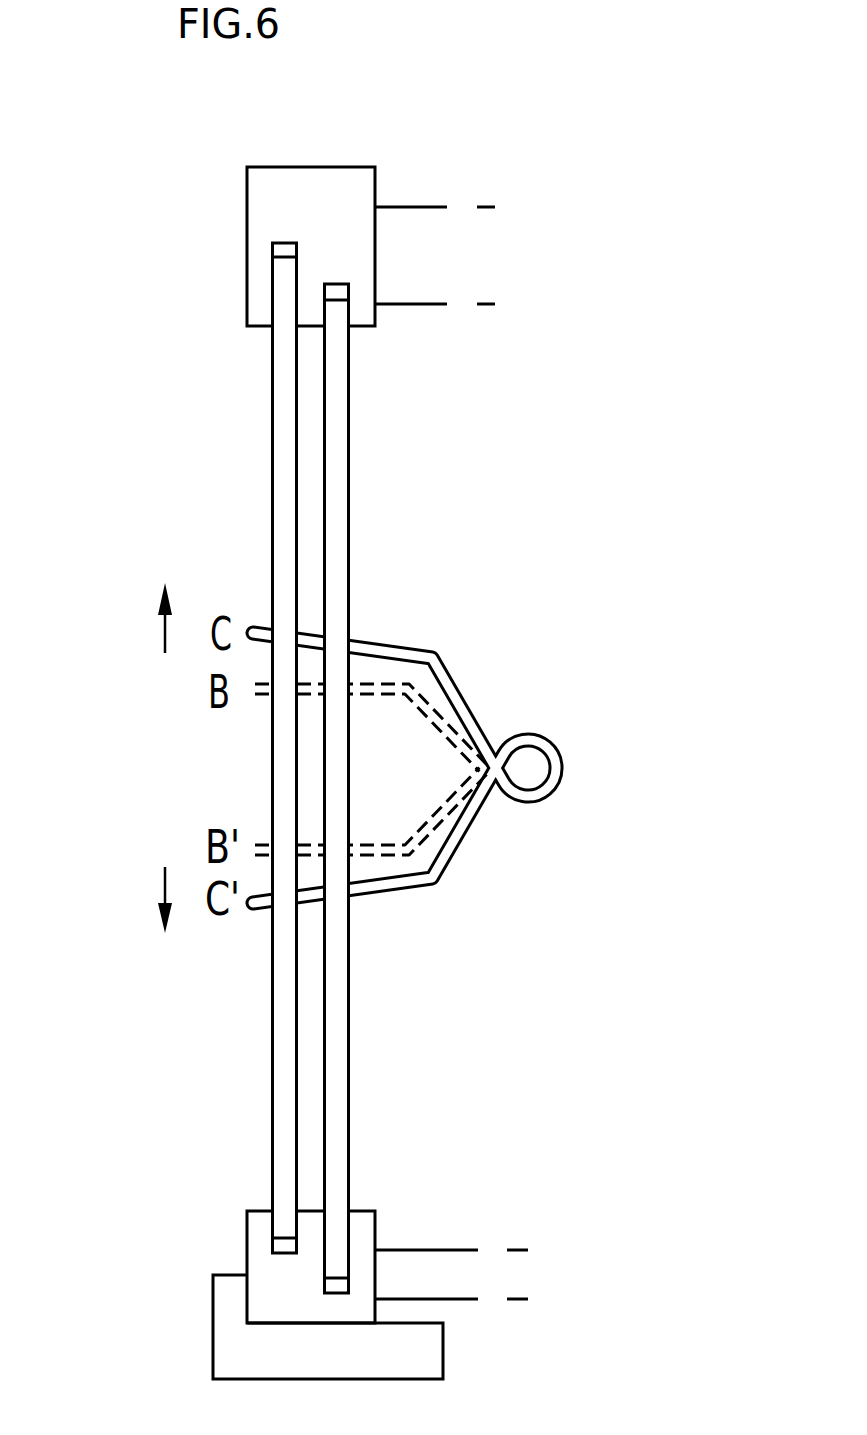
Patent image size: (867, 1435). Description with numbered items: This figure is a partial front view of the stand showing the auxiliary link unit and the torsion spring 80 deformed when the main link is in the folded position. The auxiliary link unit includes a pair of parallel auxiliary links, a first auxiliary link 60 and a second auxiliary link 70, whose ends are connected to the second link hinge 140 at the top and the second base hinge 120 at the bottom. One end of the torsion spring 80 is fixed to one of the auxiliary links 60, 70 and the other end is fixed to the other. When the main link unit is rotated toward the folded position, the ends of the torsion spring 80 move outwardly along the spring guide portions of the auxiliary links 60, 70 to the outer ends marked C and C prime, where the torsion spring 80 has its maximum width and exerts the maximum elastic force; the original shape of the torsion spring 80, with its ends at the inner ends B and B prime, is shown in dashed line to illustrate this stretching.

The second link hinge 140 is at (240, 265).
The first auxiliary link 60 is at (285, 490).
The second auxiliary link 70 is at (343, 548).
The torsion spring 80 is at (568, 735).
The second base hinge 120 is at (257, 1305).